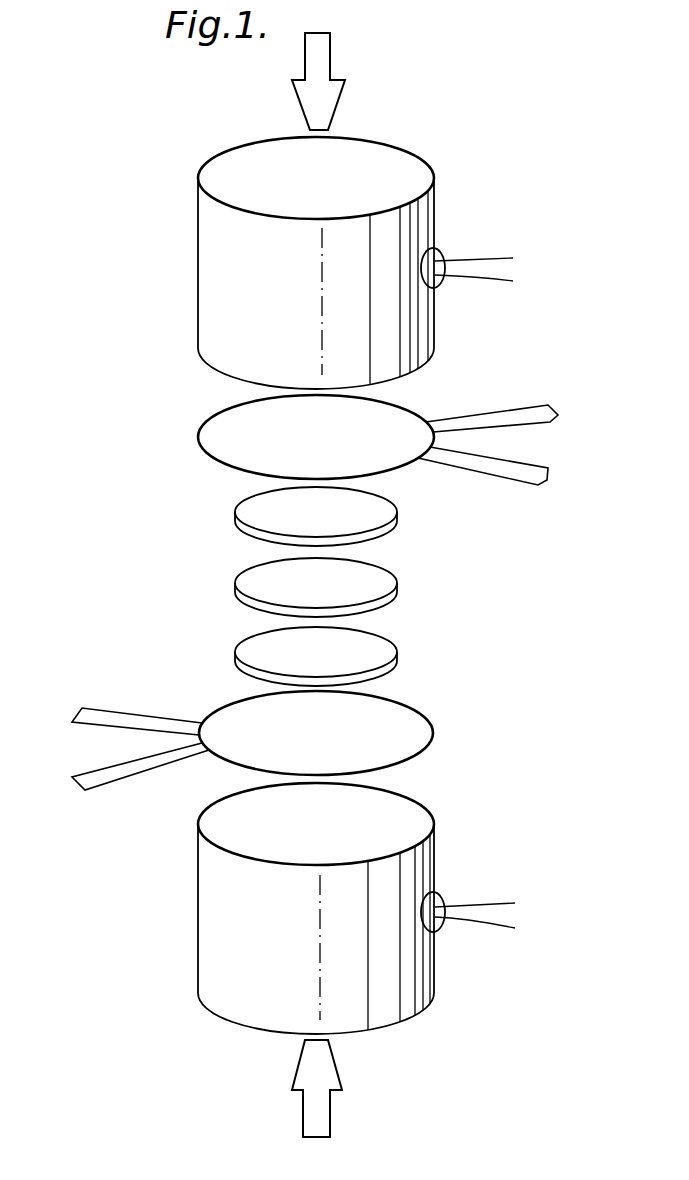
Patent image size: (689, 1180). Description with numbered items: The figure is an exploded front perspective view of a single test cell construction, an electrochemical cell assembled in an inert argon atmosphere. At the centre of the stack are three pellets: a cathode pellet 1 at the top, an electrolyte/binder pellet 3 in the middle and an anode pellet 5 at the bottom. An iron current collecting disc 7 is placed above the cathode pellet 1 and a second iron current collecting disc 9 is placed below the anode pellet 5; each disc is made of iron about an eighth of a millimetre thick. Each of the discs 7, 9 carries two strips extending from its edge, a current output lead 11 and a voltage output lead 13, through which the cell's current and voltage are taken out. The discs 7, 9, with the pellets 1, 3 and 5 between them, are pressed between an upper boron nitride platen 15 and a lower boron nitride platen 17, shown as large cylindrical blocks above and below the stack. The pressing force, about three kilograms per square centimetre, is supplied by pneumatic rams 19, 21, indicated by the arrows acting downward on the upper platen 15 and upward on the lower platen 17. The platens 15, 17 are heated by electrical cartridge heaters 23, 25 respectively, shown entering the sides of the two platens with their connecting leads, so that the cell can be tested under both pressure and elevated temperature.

The cathode pellet 1 is at (248, 514).
The electrolyte/binder pellet 3 is at (248, 583).
The anode pellet 5 is at (248, 650).
The iron current collecting disc 7 is at (212, 437).
The iron current collecting disc 9 is at (417, 732).
The current output lead 11 is at (503, 418).
The voltage output lead 13 is at (518, 472).
The boron nitride platen 15 is at (205, 262).
The boron nitride platen 17 is at (208, 945).
The pneumatic ram 19 is at (322, 53).
The pneumatic ram 21 is at (320, 1116).
The electrical cartridge heater 23 is at (450, 245).
The electrical cartridge heater 25 is at (456, 890).